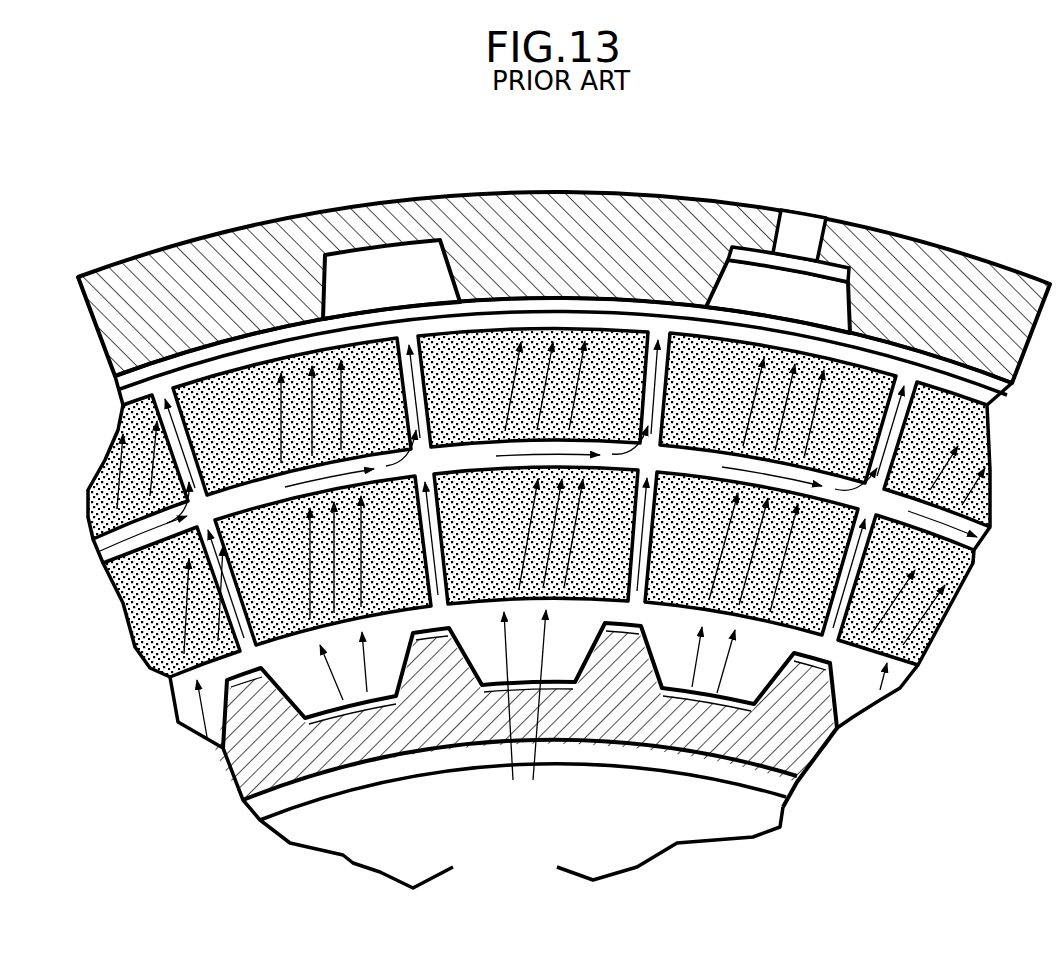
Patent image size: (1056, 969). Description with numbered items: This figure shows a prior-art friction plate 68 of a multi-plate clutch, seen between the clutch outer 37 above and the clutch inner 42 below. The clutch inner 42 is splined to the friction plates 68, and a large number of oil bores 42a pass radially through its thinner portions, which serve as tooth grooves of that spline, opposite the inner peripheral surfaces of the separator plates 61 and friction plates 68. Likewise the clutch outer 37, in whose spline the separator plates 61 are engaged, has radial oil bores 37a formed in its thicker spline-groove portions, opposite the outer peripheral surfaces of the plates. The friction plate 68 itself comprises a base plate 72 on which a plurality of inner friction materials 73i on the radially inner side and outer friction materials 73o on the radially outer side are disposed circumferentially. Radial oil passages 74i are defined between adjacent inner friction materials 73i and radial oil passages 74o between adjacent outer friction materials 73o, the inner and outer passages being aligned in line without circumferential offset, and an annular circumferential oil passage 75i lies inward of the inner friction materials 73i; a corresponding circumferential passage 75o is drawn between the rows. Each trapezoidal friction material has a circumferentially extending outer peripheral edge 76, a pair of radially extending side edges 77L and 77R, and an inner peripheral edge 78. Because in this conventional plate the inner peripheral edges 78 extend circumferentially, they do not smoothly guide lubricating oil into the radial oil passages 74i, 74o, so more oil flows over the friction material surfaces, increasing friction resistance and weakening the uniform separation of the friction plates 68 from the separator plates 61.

The clutch outer 37 is at (583, 194).
The oil bores 37a is at (778, 222).
The separator plates 61 is at (390, 275).
The base plate 72 is at (745, 325).
The friction plates 68 is at (367, 318).
The outer friction materials 73o is at (209, 417).
The inner friction materials 73i is at (241, 560).
The outer radial oil passages 74o is at (400, 382).
The outer magnet corner 75o is at (400, 462).
The inner radial oil passages 74i is at (410, 514).
The annular circumferential oil passage 75i is at (389, 630).
The outer peripheral edge 76 is at (486, 326).
The left side edge 77L is at (420, 396).
The right side edge 77R is at (648, 372).
The inner peripheral edge 78 is at (588, 442).
The clutch inner 42 is at (573, 748).
The oil bores 42a is at (510, 757).